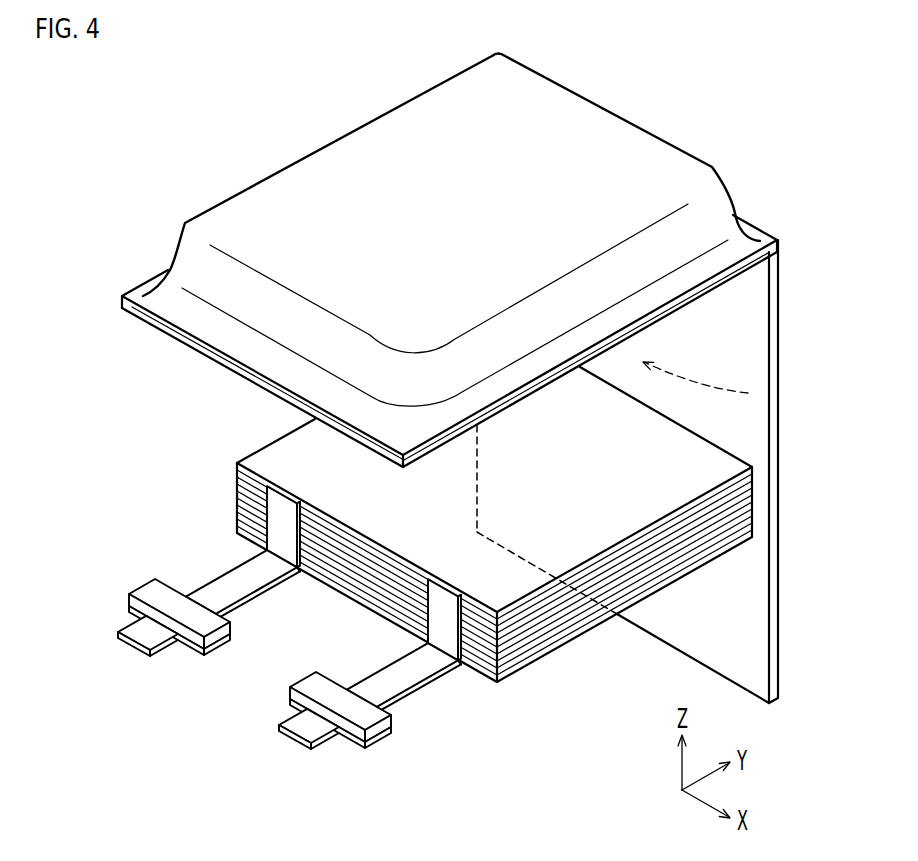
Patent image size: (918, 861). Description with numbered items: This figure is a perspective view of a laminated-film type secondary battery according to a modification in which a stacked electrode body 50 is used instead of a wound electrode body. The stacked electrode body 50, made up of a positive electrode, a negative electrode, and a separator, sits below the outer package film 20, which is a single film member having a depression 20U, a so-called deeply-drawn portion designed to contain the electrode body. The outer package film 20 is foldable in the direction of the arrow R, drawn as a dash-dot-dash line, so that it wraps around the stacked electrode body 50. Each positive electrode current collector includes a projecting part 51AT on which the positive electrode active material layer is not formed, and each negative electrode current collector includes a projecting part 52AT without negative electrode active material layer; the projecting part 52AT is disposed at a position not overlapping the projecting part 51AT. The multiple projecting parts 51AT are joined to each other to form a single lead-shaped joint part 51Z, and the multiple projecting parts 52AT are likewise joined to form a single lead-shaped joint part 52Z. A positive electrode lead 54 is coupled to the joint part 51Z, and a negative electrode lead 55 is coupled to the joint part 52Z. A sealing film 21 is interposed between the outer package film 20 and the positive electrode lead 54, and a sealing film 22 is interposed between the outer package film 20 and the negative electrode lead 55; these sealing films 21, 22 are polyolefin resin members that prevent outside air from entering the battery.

The outer package film 20 is at (449, 261).
The depression 20U is at (347, 162).
The sealing film 21 is at (153, 597).
The sealing film 22 is at (360, 728).
The stacked electrode body 50 is at (581, 655).
The projecting part 51AT is at (212, 551).
The joint part 51Z is at (237, 577).
The projecting part 52AT is at (453, 657).
The joint part 52Z is at (453, 657).
The positive electrode lead 54 is at (140, 637).
The negative electrode lead 55 is at (294, 752).
The arrow R is at (697, 388).